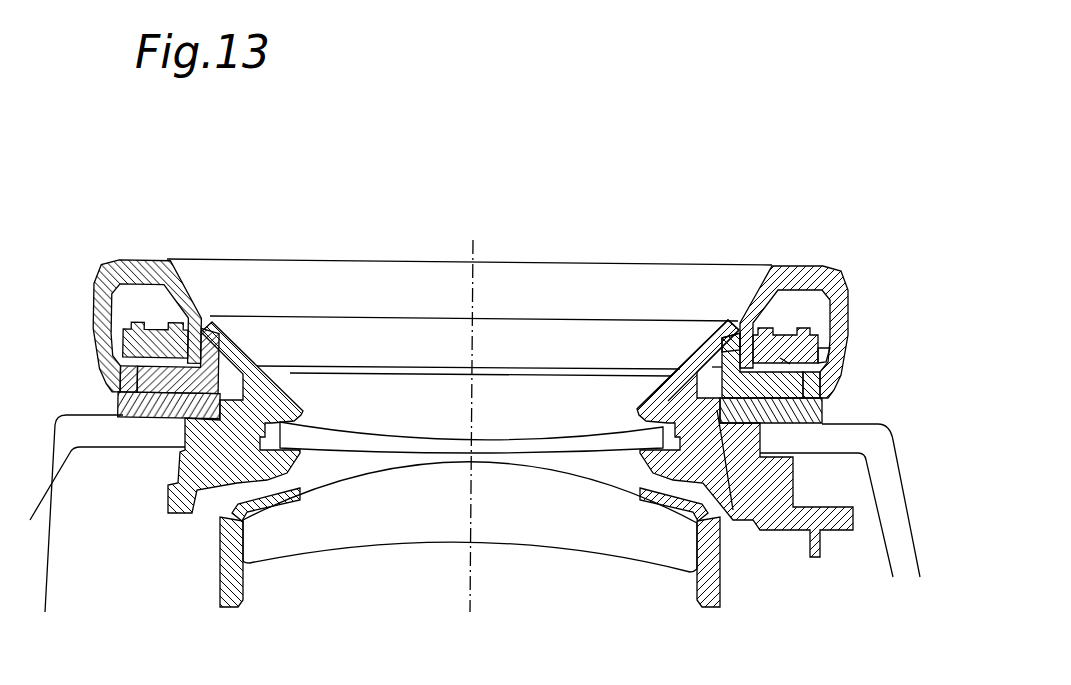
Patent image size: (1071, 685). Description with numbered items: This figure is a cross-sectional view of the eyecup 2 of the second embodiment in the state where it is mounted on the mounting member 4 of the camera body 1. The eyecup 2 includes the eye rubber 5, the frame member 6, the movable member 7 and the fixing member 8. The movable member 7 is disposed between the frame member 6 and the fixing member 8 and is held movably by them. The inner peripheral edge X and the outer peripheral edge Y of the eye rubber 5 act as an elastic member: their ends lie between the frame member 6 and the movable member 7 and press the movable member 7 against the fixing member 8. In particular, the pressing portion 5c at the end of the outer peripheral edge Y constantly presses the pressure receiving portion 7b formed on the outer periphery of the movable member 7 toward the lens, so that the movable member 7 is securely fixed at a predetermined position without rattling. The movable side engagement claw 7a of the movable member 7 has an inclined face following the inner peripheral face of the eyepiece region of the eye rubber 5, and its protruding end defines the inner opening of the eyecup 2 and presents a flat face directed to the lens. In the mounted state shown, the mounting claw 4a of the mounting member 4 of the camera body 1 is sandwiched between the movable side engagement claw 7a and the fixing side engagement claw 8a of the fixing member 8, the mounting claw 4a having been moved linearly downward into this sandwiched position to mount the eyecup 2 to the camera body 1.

The camera body 1 is at (893, 443).
The eyecup 2 is at (820, 291).
The mounting member 4 is at (701, 384).
The mounting claw 4a is at (717, 380).
The eye rubber 5 is at (845, 280).
The pressing portion 5c is at (820, 353).
The frame member 6 is at (823, 343).
The movable member 7 is at (729, 304).
The movable side engagement claw 7a is at (728, 352).
The pressure receiving portion 7b is at (830, 380).
The fixing member 8 is at (817, 410).
The fixing side engagement claw 8a is at (717, 410).
The inner peripheral edge X is at (712, 367).
The outer peripheral edge Y is at (780, 360).